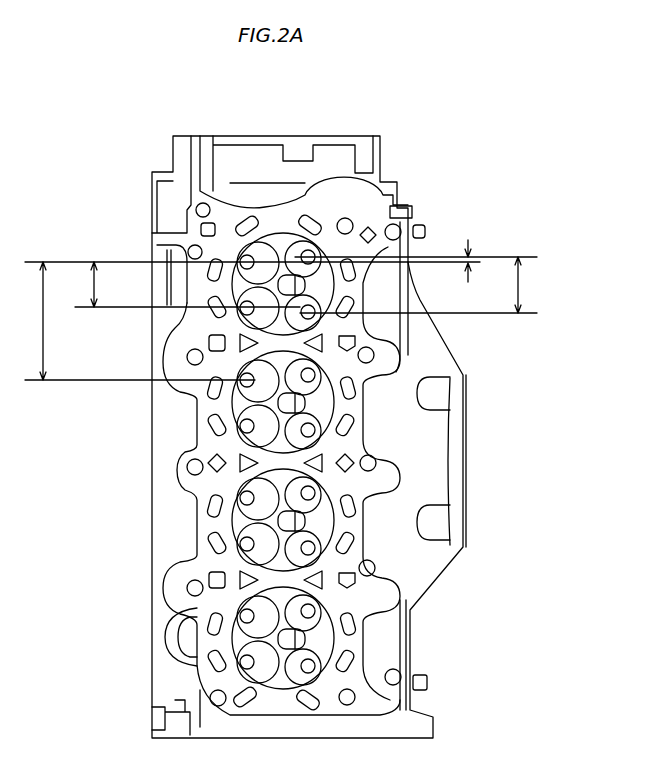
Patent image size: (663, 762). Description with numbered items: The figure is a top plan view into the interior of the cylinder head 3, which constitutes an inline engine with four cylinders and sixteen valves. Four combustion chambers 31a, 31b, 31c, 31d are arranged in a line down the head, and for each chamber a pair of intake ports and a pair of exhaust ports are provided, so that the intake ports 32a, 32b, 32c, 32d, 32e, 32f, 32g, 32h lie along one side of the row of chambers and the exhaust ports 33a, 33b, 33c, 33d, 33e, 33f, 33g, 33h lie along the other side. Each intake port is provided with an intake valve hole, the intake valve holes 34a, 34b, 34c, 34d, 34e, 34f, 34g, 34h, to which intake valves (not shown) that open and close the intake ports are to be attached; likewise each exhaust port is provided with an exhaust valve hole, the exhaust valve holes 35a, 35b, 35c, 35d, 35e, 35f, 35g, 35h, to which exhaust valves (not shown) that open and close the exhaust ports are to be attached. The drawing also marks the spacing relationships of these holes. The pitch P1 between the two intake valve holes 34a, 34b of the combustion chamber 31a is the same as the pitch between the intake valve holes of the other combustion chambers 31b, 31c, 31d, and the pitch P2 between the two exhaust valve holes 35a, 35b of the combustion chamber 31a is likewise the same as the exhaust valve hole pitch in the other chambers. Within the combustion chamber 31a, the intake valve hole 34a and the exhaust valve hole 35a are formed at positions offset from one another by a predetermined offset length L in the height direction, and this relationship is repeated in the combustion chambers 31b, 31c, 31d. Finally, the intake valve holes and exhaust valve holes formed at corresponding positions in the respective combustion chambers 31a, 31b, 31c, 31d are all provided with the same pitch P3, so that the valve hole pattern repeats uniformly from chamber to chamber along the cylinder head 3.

The cylinder head 3 is at (435, 136).
The combustion chamber 31a is at (279, 233).
The combustion chamber 31b is at (323, 405).
The combustion chamber 31c is at (323, 523).
The combustion chamber 31d is at (323, 641).
The intake port 32a is at (245, 248).
The intake port 32b is at (245, 322).
The intake port 32c is at (245, 366).
The intake port 32d is at (245, 440).
The intake port 32e is at (245, 484).
The intake port 32f is at (245, 558).
The intake port 32g is at (245, 602).
The intake port 32h is at (245, 676).
The exhaust port 33a is at (310, 243).
The exhaust port 33b is at (314, 330).
The exhaust port 33c is at (316, 362).
The exhaust port 33d is at (316, 447).
The exhaust port 33e is at (316, 480).
The exhaust port 33f is at (316, 565).
The exhaust port 33g is at (316, 598).
The exhaust port 33h is at (316, 683).
The intake valve hole 34a is at (240, 262).
The intake valve hole 34b is at (240, 306).
The intake valve hole 34c is at (240, 380).
The intake valve hole 34d is at (240, 425).
The intake valve hole 34e is at (240, 498).
The intake valve hole 34f is at (240, 543).
The intake valve hole 34g is at (240, 616).
The intake valve hole 34h is at (240, 661).
The exhaust valve hole 35a is at (316, 257).
The exhaust valve hole 35b is at (316, 313).
The exhaust valve hole 35c is at (316, 375).
The exhaust valve hole 35d is at (316, 431).
The exhaust valve hole 35e is at (316, 493).
The exhaust valve hole 35f is at (316, 549).
The exhaust valve hole 35g is at (316, 611).
The exhaust valve hole 35h is at (316, 667).
The pitch between intake valve holes P1 is at (77, 284).
The pitch between exhaust valve holes P2 is at (532, 285).
The pitch between corresponding valve holes of adjacent combustion chambers P3 is at (30, 321).
The offset length L is at (470, 260).